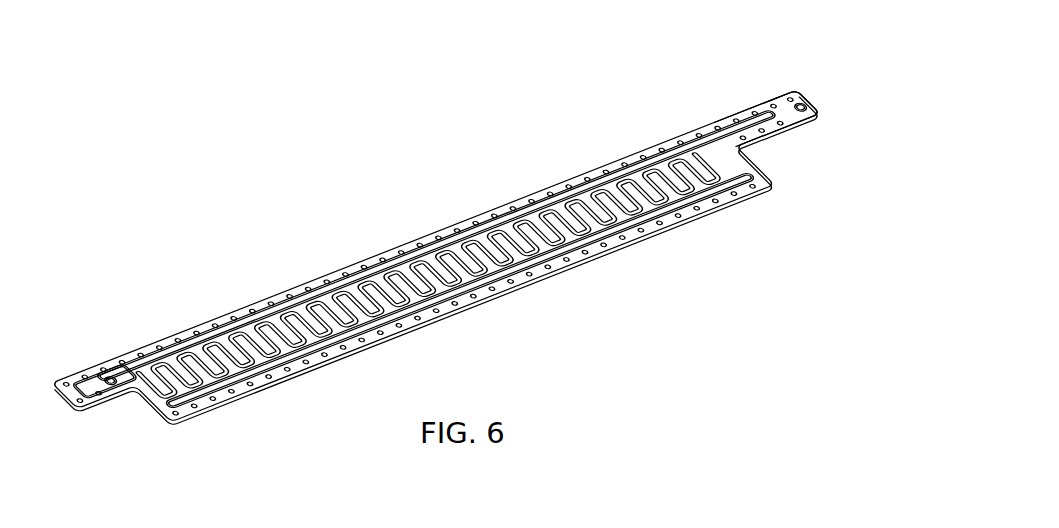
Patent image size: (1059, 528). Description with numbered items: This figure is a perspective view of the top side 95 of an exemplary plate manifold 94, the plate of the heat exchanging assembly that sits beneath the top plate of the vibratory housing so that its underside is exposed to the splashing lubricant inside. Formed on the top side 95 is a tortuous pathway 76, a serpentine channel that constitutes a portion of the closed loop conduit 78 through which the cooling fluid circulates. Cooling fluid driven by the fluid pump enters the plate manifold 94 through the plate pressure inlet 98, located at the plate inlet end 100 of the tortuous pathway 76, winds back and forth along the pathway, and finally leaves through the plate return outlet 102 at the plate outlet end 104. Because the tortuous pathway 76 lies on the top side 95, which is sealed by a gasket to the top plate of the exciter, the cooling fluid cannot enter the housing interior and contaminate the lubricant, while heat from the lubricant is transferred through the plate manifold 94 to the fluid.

The tortuous pathway 76 is at (541, 207).
The closed loop conduit 78 is at (308, 283).
The plate manifold 94 is at (522, 307).
The top side 95 is at (96, 386).
The plate pressure inlet 98 is at (805, 101).
The plate inlet end 100 is at (807, 137).
The plate return outlet 102 is at (792, 97).
The plate outlet end 104 is at (791, 70).